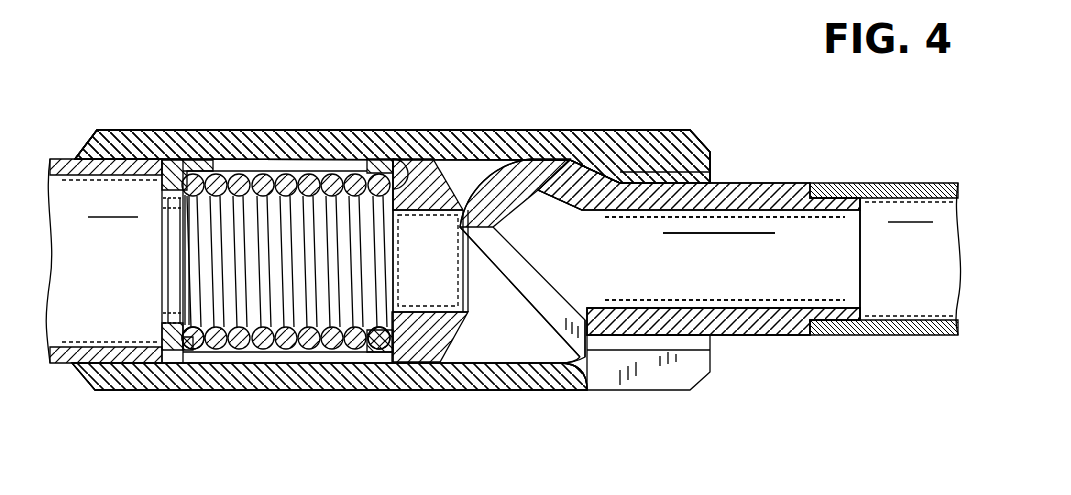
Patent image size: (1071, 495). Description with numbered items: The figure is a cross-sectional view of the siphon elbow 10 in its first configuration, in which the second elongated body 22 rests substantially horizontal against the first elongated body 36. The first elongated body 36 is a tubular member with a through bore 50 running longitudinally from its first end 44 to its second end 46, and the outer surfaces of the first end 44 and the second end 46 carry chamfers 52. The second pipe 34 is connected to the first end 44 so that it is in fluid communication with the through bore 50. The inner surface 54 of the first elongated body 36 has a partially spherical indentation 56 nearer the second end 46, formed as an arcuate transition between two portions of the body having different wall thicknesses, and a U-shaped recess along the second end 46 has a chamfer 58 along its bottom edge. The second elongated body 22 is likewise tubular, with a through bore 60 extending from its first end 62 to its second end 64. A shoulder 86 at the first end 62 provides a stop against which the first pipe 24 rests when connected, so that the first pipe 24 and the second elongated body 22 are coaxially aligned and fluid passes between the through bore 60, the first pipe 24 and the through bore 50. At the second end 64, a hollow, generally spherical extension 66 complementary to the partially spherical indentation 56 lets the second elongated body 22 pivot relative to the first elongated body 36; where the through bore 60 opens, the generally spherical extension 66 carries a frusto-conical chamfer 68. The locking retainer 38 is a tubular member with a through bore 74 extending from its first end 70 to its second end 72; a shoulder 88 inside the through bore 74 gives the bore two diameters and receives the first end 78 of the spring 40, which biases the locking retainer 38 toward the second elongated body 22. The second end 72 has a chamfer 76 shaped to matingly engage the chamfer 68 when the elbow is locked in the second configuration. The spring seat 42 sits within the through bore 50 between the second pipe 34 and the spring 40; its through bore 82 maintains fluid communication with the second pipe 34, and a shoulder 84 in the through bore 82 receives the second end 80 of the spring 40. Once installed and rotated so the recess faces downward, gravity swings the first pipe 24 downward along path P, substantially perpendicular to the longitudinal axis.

The siphon elbow 10 is at (655, 62).
The second elongated body 22 is at (772, 193).
The first pipe 24 is at (885, 183).
The second pipe 34 is at (65, 158).
The first elongated body 36 is at (372, 380).
The locking retainer 38 is at (380, 165).
The spring 40 is at (233, 172).
The spring seat 42 is at (173, 173).
The first end 44 is at (70, 157).
The second end 46 is at (712, 165).
The through bore 50 is at (490, 335).
The chamfers 52 is at (702, 131).
The inner surface 54 is at (262, 365).
The partially spherical indentation 56 is at (567, 158).
The chamfer 58 is at (567, 373).
The through bore 60 is at (712, 270).
The first end 62 is at (862, 295).
The second end 64 is at (450, 197).
The generally spherical extension 66 is at (627, 350).
The chamfer 68 is at (603, 350).
The first end 70 is at (337, 170).
The second end 72 is at (480, 298).
The through bore 74 is at (421, 274).
The chamfer 76 is at (452, 340).
The first end 78 is at (380, 347).
The second end 80 is at (187, 347).
The through bore 82 is at (167, 270).
The shoulder 84 is at (193, 343).
The shoulder 86 is at (795, 340).
The shoulder 88 is at (413, 173).
The path P is at (910, 345).